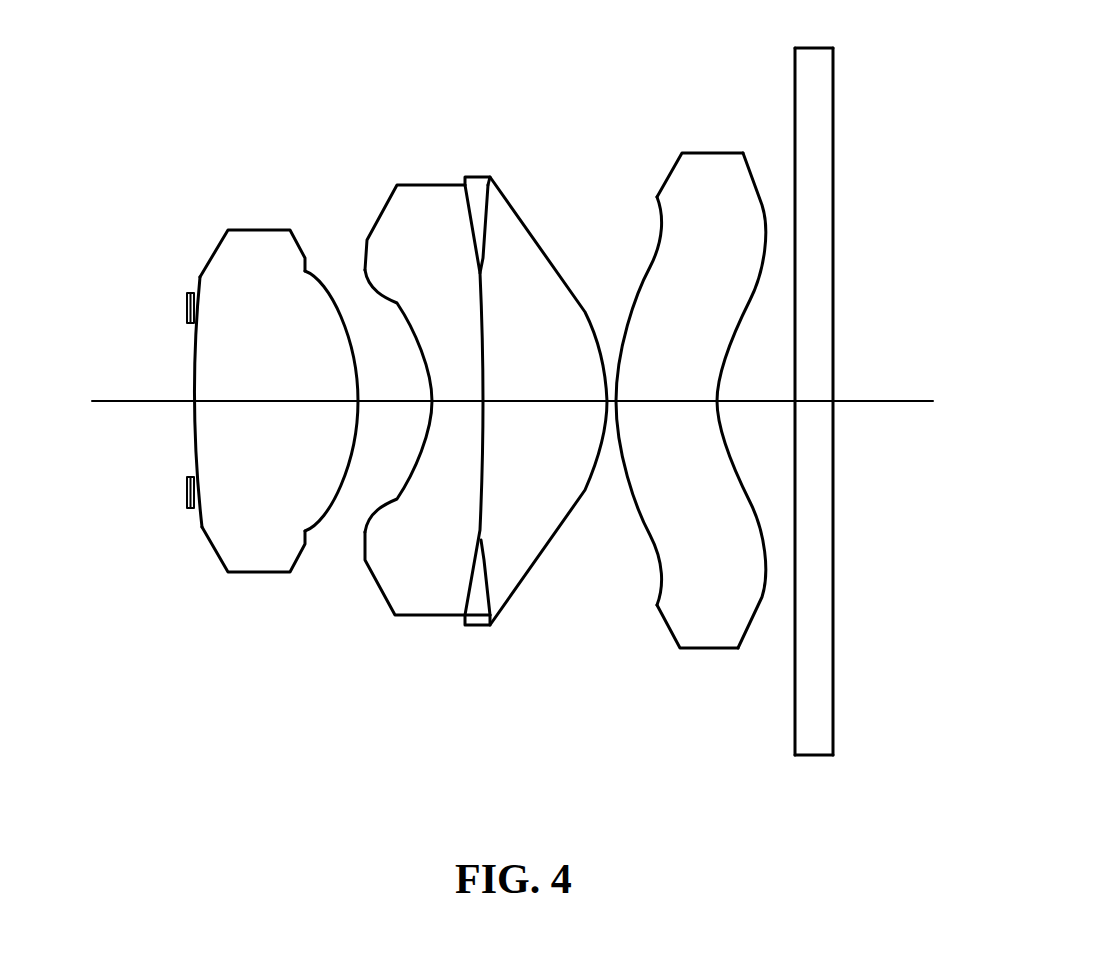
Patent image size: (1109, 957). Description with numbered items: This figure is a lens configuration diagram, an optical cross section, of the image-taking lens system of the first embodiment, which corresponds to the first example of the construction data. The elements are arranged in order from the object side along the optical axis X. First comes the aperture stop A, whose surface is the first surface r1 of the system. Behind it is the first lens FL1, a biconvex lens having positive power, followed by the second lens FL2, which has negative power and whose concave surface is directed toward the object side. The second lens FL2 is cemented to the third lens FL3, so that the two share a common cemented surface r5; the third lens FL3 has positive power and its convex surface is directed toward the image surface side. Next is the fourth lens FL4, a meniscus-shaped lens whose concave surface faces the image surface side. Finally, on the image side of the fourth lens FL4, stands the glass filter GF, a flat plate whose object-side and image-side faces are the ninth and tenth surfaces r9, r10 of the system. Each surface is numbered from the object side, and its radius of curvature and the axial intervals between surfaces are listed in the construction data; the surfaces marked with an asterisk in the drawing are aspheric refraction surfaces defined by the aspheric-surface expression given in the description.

The first surface r1 is at (188, 303).
The fifth surface r5 is at (483, 177).
The ninth surface r9 is at (795, 93).
The tenth surface r10 is at (835, 157).
The aperture stop A is at (148, 419).
The optical axis X is at (897, 404).
The glass filter GF is at (865, 381).
The first lens FL1 is at (204, 433).
The second lens FL2 is at (419, 410).
The third lens FL3 is at (536, 431).
The fourth lens FL4 is at (672, 389).